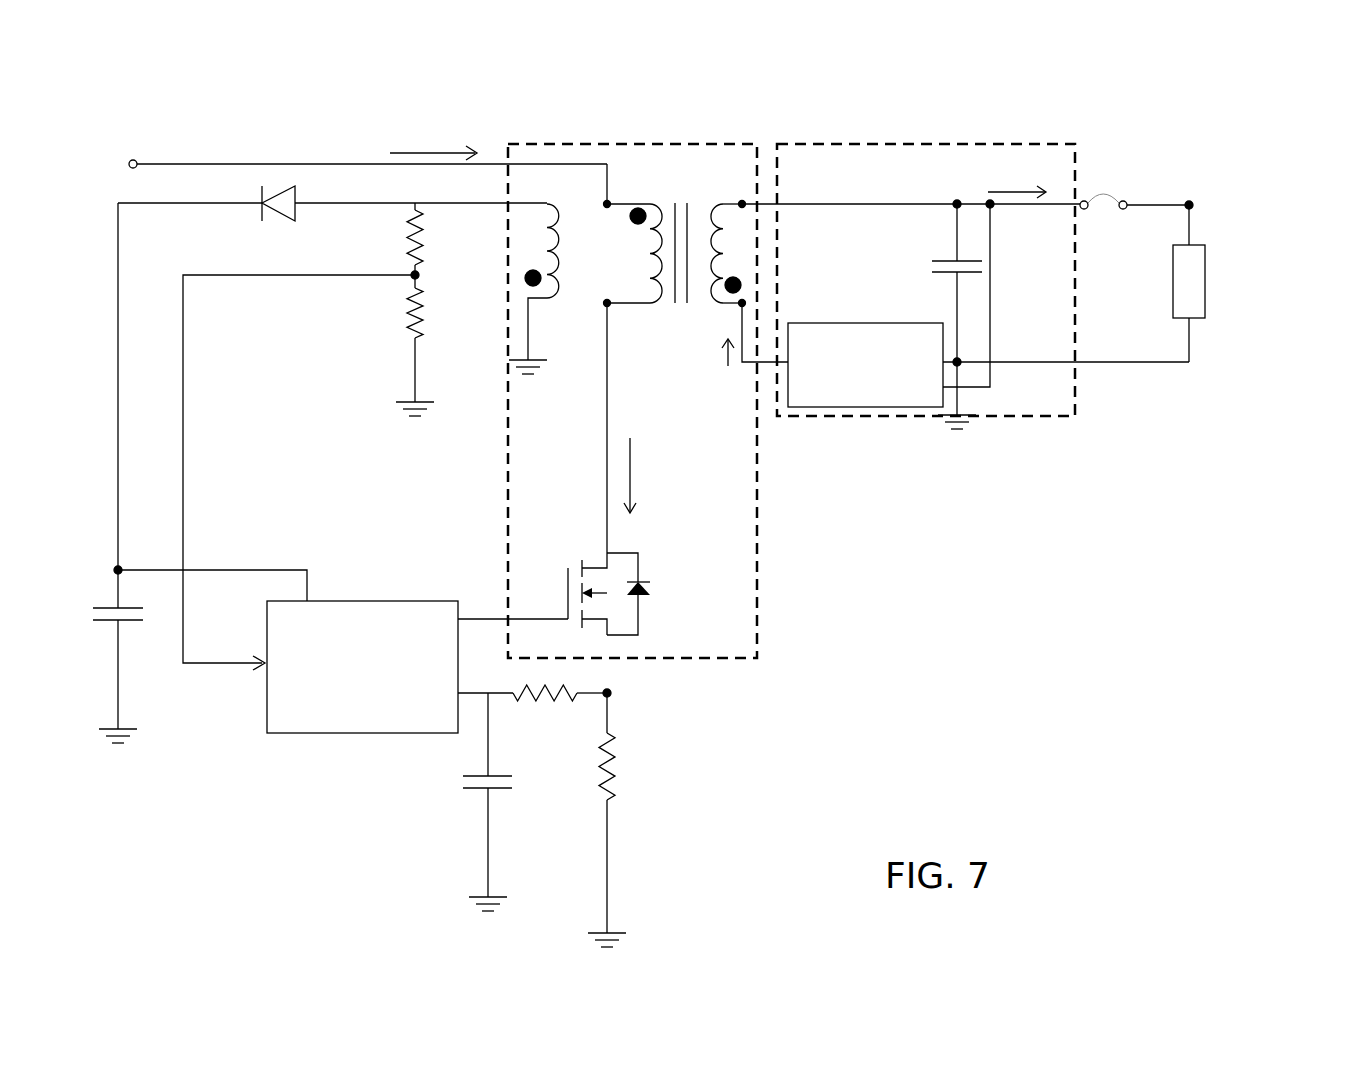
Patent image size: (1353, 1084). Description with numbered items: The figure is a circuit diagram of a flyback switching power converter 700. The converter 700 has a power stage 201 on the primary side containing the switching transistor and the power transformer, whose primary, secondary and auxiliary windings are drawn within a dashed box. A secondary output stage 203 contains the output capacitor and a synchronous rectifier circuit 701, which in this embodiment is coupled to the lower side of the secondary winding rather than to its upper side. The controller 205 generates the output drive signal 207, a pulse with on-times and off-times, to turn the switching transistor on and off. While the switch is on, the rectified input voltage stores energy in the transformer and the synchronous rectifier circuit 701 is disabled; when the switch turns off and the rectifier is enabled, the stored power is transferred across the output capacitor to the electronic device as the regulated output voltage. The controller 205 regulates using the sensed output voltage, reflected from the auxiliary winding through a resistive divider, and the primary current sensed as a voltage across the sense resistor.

The flyback switching power converter 700 is at (886, 600).
The power stage 201 is at (508, 144).
The secondary output stage 203 is at (852, 144).
The controller 205 is at (363, 601).
The output drive signal 207 is at (550, 610).
The synchronous rectifier circuit 701 is at (815, 407).